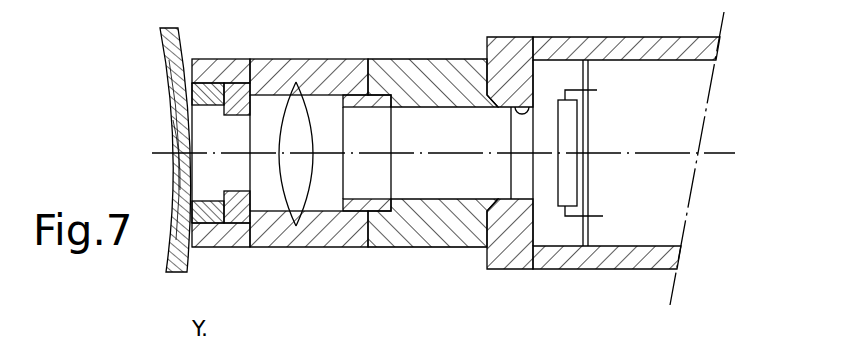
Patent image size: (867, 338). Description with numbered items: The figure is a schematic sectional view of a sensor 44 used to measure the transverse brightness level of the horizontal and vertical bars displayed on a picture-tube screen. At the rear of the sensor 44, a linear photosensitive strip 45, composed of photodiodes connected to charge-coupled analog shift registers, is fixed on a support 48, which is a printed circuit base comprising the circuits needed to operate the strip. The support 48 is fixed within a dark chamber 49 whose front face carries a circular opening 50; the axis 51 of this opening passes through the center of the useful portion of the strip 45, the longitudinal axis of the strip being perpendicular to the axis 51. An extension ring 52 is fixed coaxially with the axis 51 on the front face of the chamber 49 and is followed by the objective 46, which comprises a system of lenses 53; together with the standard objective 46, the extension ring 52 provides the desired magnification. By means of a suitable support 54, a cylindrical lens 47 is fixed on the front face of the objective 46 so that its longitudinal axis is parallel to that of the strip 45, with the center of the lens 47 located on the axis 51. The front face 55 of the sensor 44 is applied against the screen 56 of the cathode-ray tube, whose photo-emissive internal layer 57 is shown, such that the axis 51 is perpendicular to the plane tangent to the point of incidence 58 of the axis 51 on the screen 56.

The sensor 44 is at (408, 267).
The linear photosensitive strip 45 is at (562, 113).
The objective 46 is at (318, 67).
The cylindrical lens 47 is at (217, 183).
The support 48 is at (590, 205).
The dark chamber 49 is at (533, 263).
The circular opening 50 is at (518, 112).
The axis 51 is at (655, 153).
The extension ring 52 is at (419, 72).
The system of lenses 53 is at (297, 203).
The support 54 is at (260, 62).
The front face 55 is at (189, 74).
The screen 56 is at (176, 48).
The photo-emissive internal layer 57 is at (177, 97).
The point of incidence 58 is at (176, 173).